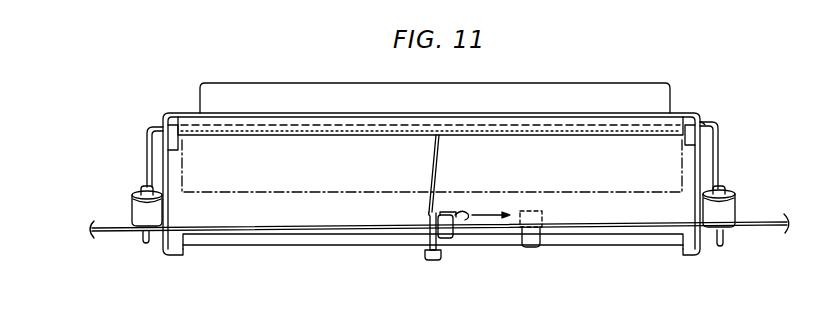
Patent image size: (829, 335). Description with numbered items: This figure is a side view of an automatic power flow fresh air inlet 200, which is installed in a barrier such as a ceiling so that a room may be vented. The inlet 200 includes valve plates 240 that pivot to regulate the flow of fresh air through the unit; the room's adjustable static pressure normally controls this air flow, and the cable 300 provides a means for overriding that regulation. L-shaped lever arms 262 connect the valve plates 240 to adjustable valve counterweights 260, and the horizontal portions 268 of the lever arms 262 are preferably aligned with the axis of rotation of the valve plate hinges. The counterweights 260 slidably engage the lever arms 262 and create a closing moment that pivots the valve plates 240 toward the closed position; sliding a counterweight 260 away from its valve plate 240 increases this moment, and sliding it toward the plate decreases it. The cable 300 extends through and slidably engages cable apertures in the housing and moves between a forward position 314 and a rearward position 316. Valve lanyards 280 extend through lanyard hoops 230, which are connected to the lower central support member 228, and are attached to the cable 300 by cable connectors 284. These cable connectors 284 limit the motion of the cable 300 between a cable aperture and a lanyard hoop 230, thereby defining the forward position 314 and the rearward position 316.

The fresh air inlet 200 is at (702, 96).
The lower central support member 228 is at (612, 243).
The lanyard hoops 230 is at (430, 235).
The valve plates 240 is at (253, 178).
The adjustable valve counterweights 260 is at (132, 210).
The l-shaped lever arms 262 is at (147, 153).
The horizontal portions 268 is at (703, 123).
The valve lanyards 280 is at (437, 162).
The cable connectors 284 is at (455, 230).
The cable 300 is at (116, 233).
The forward position 314 is at (531, 247).
The rearward position 316 is at (434, 255).